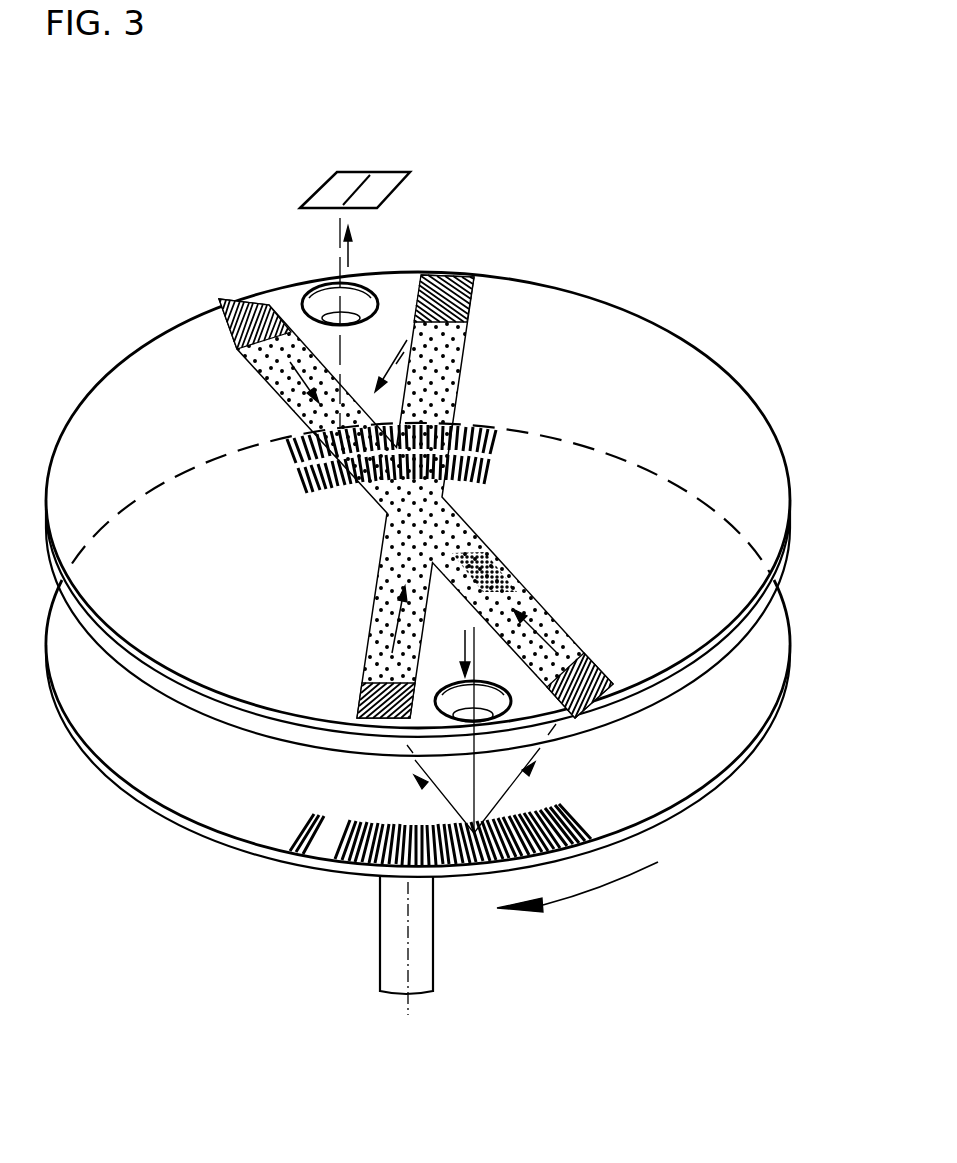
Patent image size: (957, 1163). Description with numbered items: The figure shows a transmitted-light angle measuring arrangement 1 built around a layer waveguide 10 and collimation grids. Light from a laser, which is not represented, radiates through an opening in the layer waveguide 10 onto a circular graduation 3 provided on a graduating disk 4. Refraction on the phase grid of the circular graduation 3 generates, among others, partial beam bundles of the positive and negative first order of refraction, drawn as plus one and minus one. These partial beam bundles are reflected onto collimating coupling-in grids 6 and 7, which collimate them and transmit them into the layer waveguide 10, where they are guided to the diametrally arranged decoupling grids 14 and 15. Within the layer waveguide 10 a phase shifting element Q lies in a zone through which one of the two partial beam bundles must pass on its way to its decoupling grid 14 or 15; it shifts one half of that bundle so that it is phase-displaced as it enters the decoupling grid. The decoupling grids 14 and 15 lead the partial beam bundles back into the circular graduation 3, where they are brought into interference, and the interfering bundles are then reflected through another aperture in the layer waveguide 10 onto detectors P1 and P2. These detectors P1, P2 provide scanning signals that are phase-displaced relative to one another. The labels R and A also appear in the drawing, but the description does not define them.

The transmitted-light angle measuring arrangement 1 is at (358, 900).
The circular graduation 3 is at (318, 868).
The graduating disk 4 is at (268, 770).
The collimating coupling-in grid 6 is at (368, 702).
The collimating coupling-in grid 7 is at (598, 672).
The layer waveguide 10 is at (177, 683).
The decoupling grid 14 is at (466, 282).
The decoupling grid 15 is at (230, 312).
The detector P1 is at (348, 182).
The detector P2 is at (387, 182).
The rotation axis / shaft R is at (410, 952).
The scanning area A is at (252, 572).
The phase shifting element Q is at (500, 572).